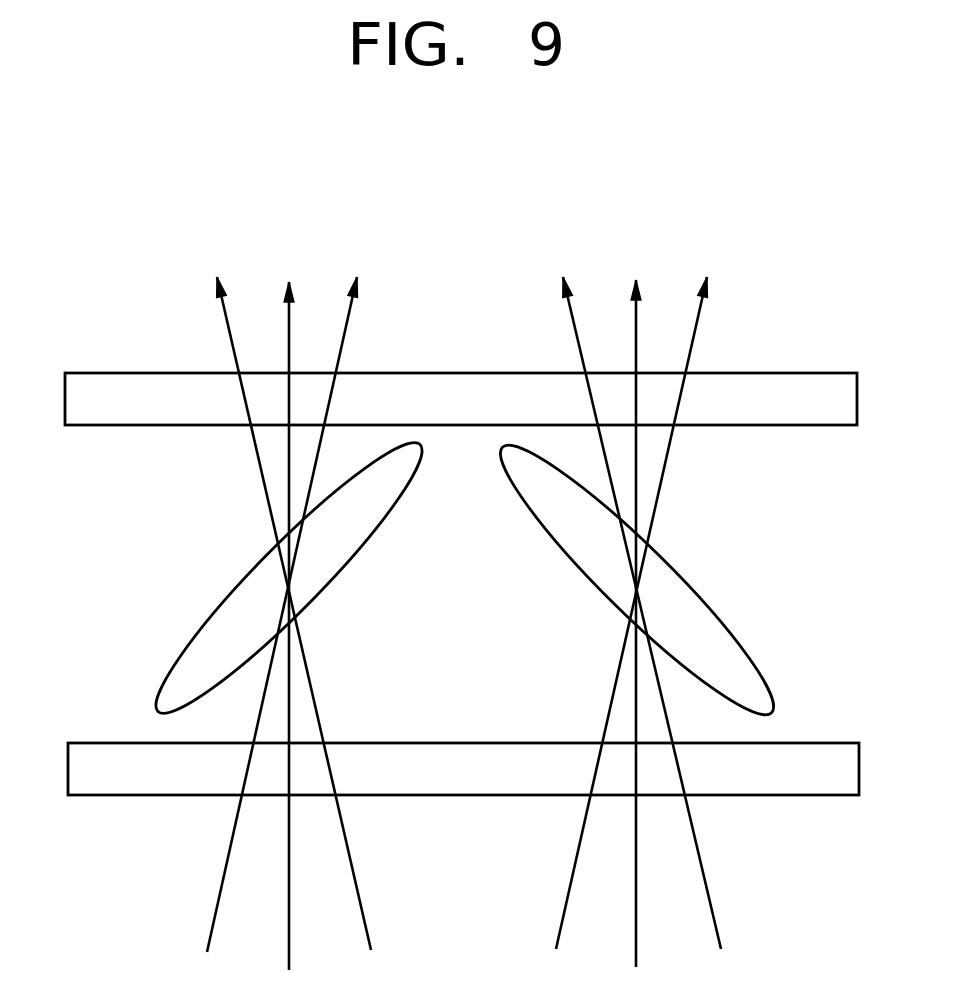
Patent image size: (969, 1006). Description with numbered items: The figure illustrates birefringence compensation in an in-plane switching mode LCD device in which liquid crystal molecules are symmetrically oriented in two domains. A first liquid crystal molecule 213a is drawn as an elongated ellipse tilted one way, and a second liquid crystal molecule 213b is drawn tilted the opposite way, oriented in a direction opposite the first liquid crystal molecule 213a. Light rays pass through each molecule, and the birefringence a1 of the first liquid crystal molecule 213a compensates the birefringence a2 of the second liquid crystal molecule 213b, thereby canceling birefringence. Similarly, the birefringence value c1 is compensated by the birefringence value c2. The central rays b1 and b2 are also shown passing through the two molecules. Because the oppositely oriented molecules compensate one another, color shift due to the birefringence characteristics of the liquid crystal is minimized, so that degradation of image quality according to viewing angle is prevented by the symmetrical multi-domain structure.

The first liquid crystal molecule 213a is at (212, 637).
The second liquid crystal molecule 213b is at (715, 637).
The birefringence of the first liquid crystal molecule a1 is at (285, 596).
The second light ray of left group b1 is at (286, 606).
The birefringence value c1 is at (290, 597).
The birefringence of the second liquid crystal molecule a2 is at (634, 595).
The second light ray of right group b2 is at (632, 604).
The birefringence value c2 is at (639, 595).